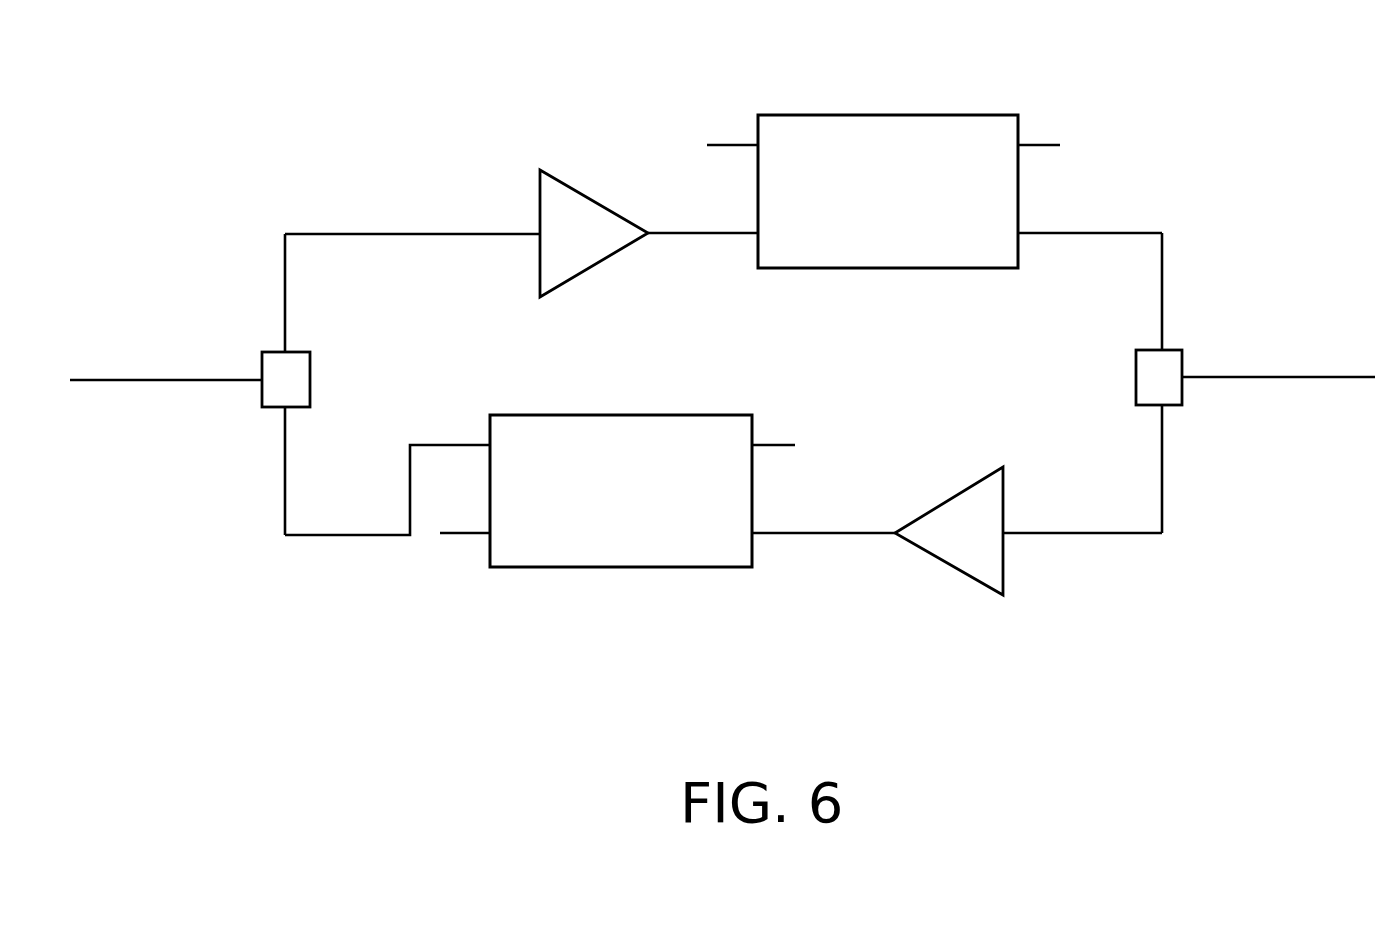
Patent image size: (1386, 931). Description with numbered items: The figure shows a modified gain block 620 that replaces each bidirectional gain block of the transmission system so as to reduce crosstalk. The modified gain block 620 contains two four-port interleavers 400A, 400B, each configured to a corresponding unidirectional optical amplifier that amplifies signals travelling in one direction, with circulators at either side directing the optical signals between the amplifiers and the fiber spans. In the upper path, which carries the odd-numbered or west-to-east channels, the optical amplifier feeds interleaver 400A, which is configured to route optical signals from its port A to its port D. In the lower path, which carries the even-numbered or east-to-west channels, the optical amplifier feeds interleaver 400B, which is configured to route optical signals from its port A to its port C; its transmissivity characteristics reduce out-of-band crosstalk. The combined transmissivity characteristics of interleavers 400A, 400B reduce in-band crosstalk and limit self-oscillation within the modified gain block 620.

The interleaver 400A is at (880, 115).
The interleaver 400B is at (638, 567).
The modified gain block 620 is at (220, 658).